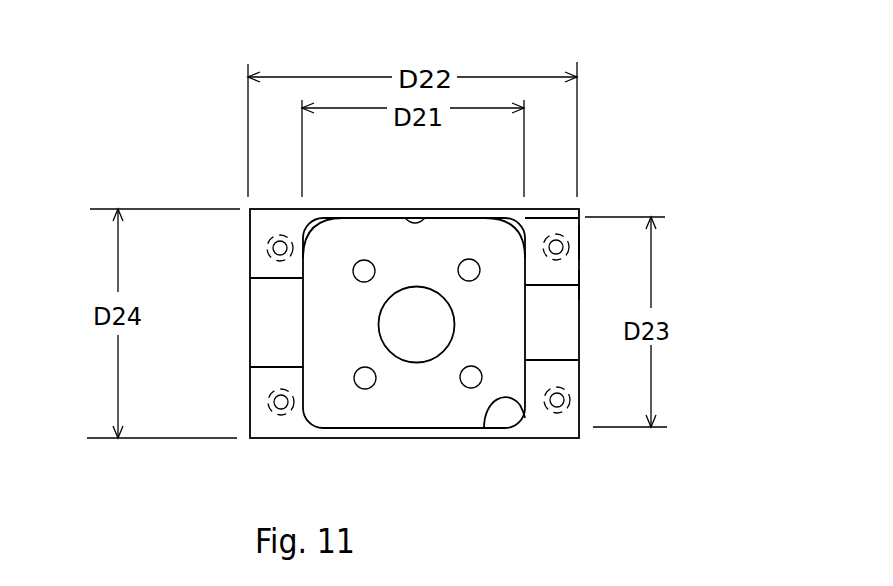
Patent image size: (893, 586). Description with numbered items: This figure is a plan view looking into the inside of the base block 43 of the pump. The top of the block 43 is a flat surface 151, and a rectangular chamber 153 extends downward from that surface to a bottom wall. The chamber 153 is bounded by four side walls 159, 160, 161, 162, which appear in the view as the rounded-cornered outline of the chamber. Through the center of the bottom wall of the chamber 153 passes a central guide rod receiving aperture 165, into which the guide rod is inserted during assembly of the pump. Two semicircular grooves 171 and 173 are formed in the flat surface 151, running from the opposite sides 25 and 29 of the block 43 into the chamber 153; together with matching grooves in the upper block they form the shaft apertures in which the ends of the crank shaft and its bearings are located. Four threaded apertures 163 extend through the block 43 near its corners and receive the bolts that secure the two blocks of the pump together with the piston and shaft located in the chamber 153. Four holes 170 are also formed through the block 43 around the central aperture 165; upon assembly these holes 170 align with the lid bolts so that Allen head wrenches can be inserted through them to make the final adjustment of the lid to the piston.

The side 29 is at (249, 249).
The rectangular chamber 153 is at (377, 403).
The semicircular groove 173 is at (266, 344).
The semicircular groove 171 is at (568, 341).
The threaded aperture 163 is at (554, 246).
The hole 170 is at (365, 260).
The central guide rod receiving aperture 165 is at (420, 287).
The side wall 161 is at (305, 253).
The side wall 159 is at (520, 258).
The side wall 162 is at (404, 218).
The side wall 160 is at (516, 400).
The base block 43 is at (581, 244).
The flat surface 151 is at (564, 267).
The side 25 is at (582, 278).